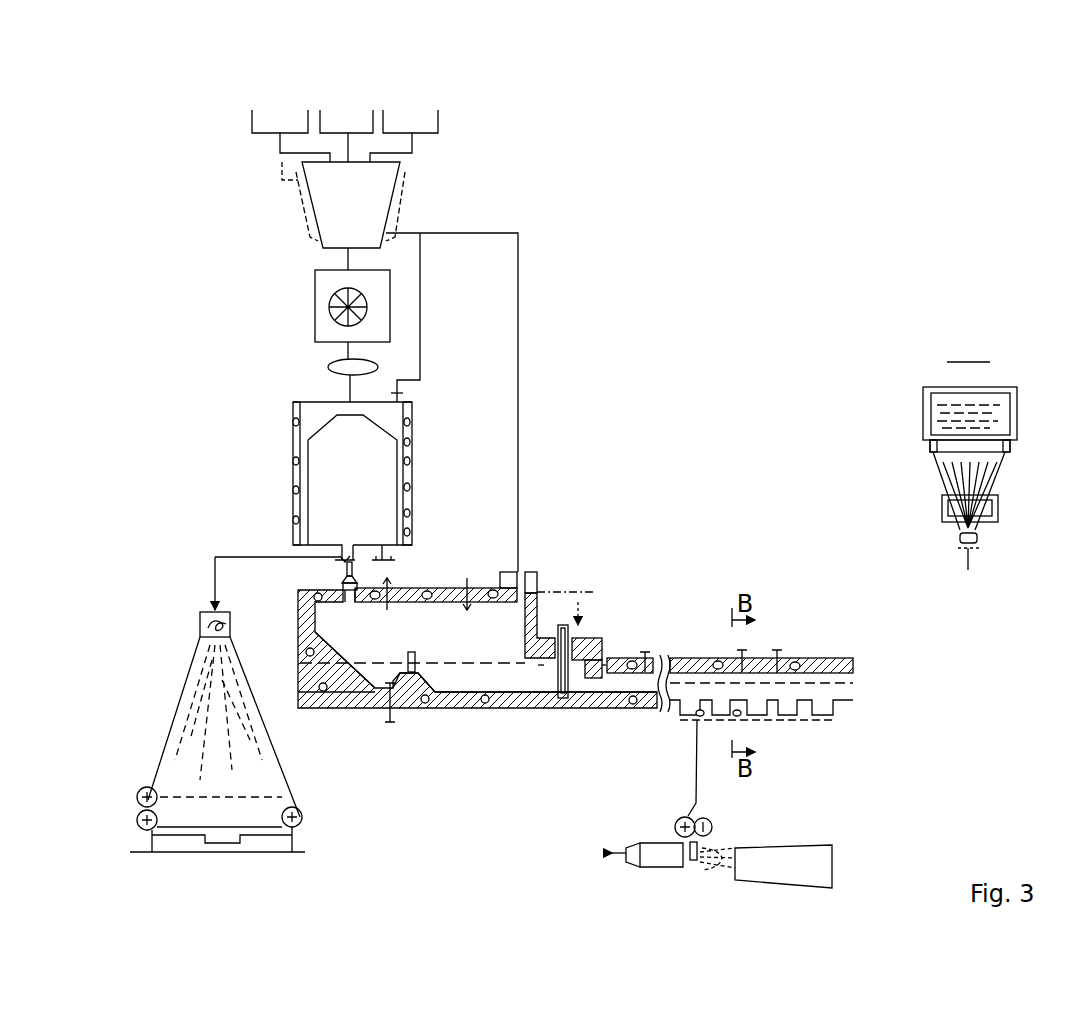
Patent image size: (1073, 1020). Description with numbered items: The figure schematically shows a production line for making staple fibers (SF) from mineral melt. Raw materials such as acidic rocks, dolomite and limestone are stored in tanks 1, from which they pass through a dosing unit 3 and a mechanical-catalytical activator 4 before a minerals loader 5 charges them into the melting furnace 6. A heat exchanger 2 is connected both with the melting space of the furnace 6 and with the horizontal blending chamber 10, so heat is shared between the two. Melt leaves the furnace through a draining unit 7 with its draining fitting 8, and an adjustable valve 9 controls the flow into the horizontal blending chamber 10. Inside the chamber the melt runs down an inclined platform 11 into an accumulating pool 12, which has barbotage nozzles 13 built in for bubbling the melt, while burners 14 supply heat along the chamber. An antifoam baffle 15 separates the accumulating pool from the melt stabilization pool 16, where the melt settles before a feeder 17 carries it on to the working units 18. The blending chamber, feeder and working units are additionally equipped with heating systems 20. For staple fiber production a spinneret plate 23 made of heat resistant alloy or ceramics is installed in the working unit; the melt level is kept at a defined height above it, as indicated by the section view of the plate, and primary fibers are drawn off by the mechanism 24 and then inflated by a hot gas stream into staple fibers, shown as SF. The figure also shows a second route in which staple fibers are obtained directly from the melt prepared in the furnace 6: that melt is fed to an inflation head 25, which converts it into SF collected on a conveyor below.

The tanks 1 is at (345, 134).
The heat exchanger 2 is at (400, 182).
The dosing unit 3 is at (326, 193).
The mechanical-catalytical activator 4 is at (323, 300).
The minerals loader 5 is at (330, 368).
The melting furnace 6 is at (320, 475).
The draining unit 7 is at (343, 559).
The draining fitting 8 is at (385, 548).
The adjustable valve 9 is at (338, 572).
The horizontal blending chamber 10 is at (312, 627).
The inclined platform 11 is at (301, 676).
The accumulating pool 12 is at (382, 678).
The barbotage nozzles 13 is at (387, 720).
The burners 14 is at (467, 587).
The antifoam baffle 15 is at (418, 708).
The melt stabilization pool 16 is at (528, 680).
The feeder 17 is at (623, 675).
The working units 18 is at (697, 720).
The heating systems 20 is at (640, 660).
The spinneret plate 23 is at (1002, 445).
The mechanism 24 is at (690, 815).
The inflation head 25 is at (200, 620).